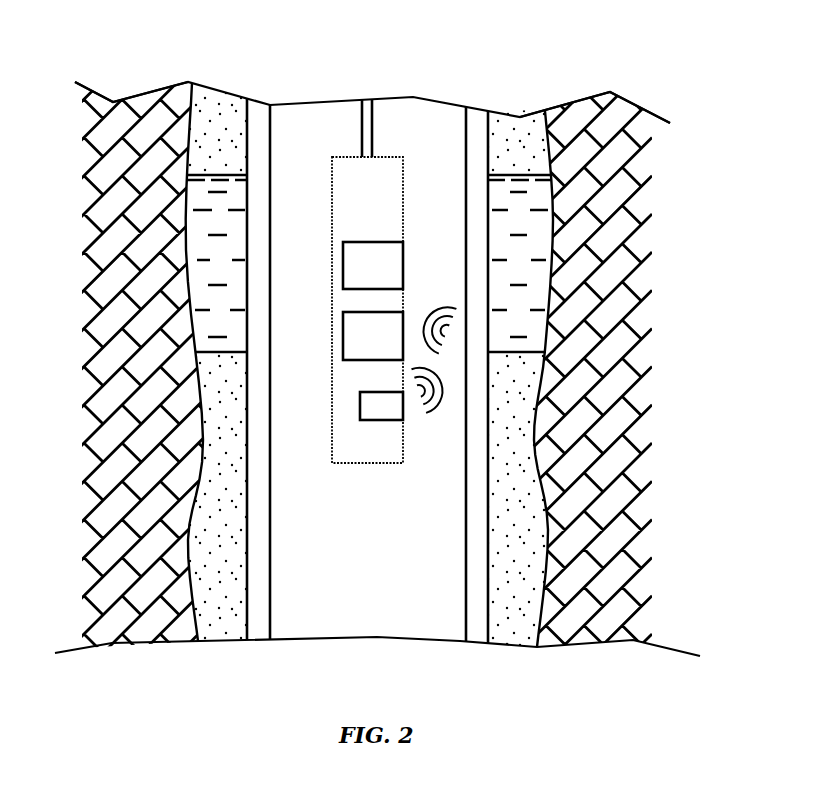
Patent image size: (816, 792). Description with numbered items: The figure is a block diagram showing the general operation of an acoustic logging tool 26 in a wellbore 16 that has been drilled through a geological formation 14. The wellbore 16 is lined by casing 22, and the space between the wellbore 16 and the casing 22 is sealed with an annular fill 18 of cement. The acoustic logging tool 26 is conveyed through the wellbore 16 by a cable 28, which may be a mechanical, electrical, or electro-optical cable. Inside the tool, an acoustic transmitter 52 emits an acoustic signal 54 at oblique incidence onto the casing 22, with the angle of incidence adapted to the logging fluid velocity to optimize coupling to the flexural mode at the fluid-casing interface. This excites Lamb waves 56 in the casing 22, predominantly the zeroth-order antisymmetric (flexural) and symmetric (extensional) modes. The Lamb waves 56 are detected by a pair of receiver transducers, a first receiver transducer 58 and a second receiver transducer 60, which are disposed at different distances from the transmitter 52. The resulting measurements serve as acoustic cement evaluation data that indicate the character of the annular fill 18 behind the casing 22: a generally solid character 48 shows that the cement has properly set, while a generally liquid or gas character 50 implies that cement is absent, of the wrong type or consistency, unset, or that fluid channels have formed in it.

The geological formation 14 is at (636, 306).
The wellbore 16 is at (315, 85).
The annular fill 18 is at (217, 103).
The casing joints 22 is at (467, 148).
The acoustic logging tool 26 is at (380, 197).
The cable 28 is at (366, 145).
The generally solid character of the annular fill 48 is at (229, 404).
The generally liquid or gas character of the annular fill 50 is at (515, 208).
The acoustic transmitter 52 is at (382, 421).
The acoustic signal 54 is at (440, 418).
The Lamb waves 56 is at (443, 303).
The first receiver transducer 58 is at (345, 333).
The second receiver transducer 60 is at (345, 262).